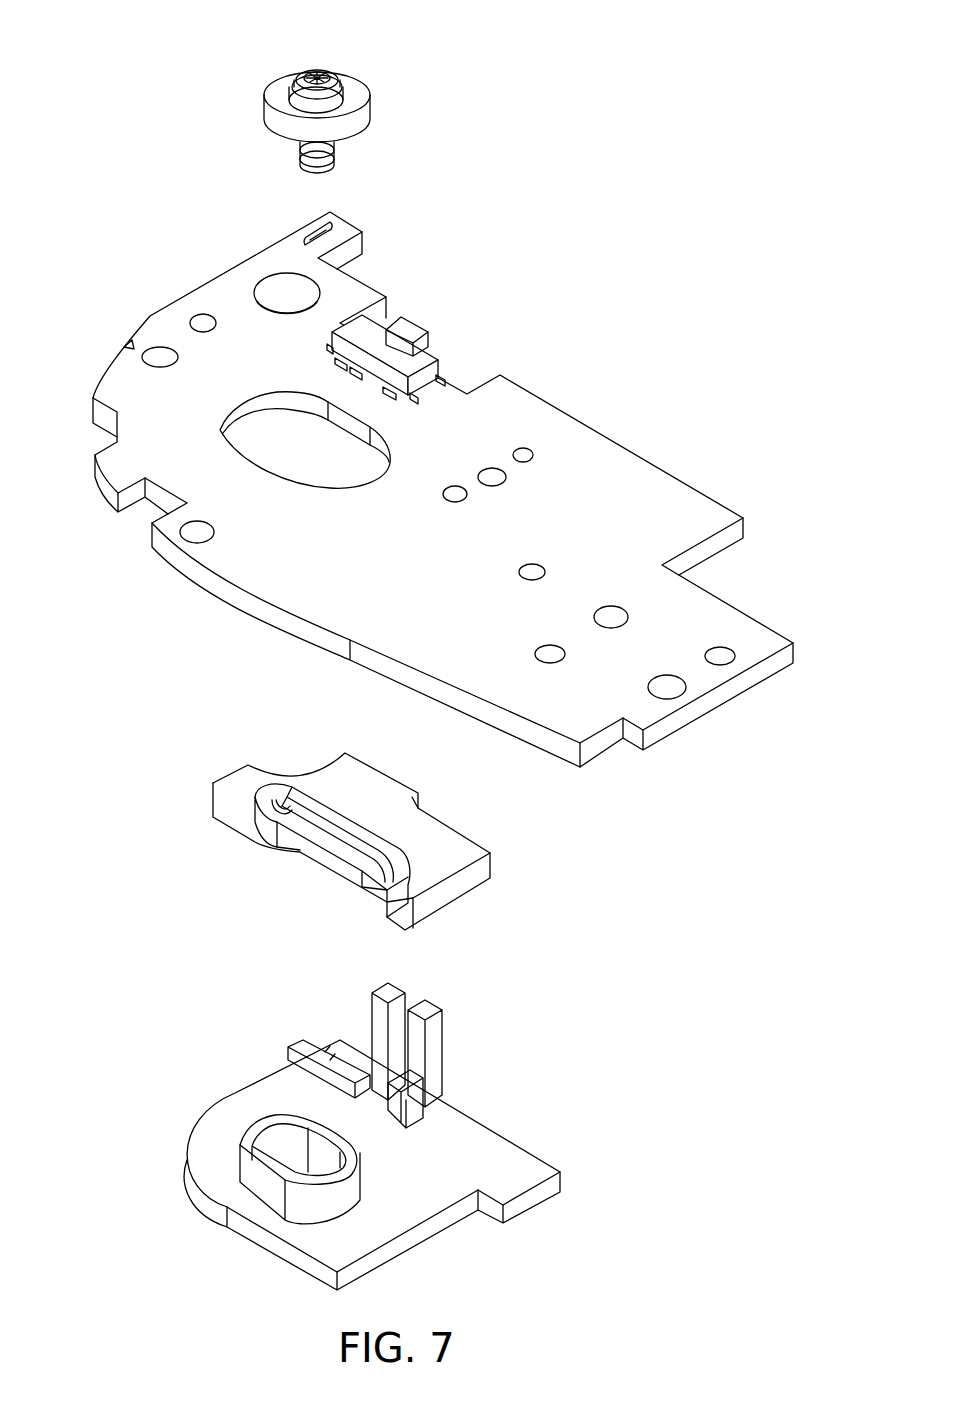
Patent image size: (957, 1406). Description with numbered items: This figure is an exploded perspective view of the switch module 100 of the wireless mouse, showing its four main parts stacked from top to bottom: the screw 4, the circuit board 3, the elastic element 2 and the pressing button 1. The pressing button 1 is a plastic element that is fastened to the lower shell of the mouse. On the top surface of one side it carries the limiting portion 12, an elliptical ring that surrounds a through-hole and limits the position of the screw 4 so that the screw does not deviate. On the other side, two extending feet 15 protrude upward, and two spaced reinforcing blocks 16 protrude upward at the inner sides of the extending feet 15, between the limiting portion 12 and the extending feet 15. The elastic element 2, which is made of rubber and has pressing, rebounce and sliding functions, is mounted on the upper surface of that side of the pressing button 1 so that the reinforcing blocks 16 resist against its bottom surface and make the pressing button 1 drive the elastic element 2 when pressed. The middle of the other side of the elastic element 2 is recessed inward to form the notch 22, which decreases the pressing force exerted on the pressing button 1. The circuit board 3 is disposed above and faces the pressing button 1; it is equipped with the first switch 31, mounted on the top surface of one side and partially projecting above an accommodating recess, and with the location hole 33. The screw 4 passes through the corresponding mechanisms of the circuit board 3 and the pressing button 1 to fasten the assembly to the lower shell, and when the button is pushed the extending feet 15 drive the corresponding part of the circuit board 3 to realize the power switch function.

The switch module 100 is at (98, 33).
The pressing button 1 is at (421, 1122).
The limiting portion 12 is at (265, 1187).
The extending foot 15 is at (433, 1048).
The reinforcing block 16 is at (373, 1070).
The elastic element 2 is at (440, 841).
The notch 22 is at (317, 823).
The circuit board 3 is at (567, 390).
The first switch 31 is at (410, 325).
The location hole 33 is at (273, 438).
The screw 4 is at (378, 120).